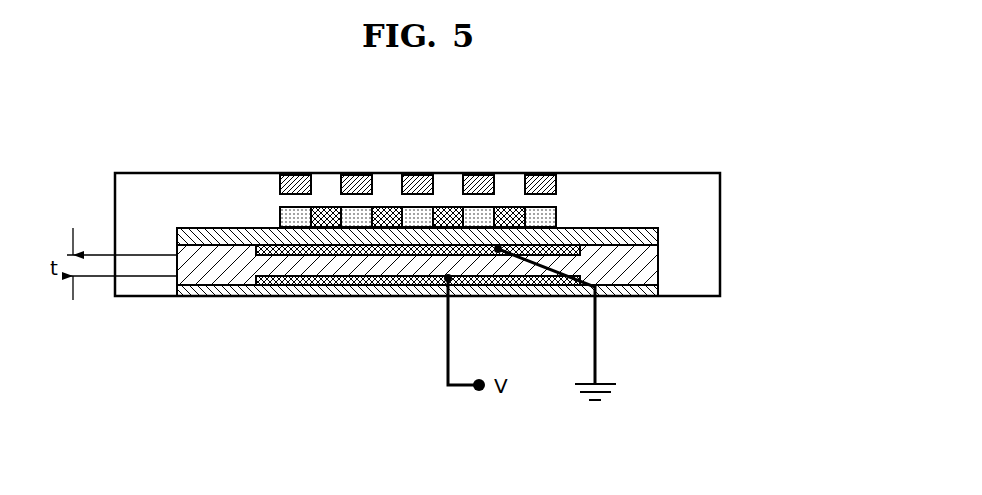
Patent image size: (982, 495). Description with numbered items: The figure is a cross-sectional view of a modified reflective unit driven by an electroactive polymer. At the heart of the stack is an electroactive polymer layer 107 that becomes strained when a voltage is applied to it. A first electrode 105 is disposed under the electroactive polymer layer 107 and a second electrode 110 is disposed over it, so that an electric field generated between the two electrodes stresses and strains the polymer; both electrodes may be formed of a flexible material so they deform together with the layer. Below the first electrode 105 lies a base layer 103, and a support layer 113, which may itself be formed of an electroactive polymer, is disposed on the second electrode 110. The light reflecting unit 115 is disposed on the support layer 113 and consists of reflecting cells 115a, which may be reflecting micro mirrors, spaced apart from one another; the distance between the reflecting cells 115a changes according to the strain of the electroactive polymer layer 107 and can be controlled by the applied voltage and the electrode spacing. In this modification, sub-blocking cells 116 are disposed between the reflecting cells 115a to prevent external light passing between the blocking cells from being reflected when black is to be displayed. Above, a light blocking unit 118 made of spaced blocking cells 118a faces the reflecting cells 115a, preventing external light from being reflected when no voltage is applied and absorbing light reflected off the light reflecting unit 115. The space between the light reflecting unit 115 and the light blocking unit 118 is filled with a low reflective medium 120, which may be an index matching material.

The lower substrate 103 is at (632, 292).
The first electrode 105 is at (268, 286).
The electroactive polymer layer 107 is at (645, 265).
The second electrode 110 is at (262, 245).
The support layer 113 is at (657, 232).
The light reflecting unit 115 is at (547, 196).
The reflecting cells 115a is at (560, 213).
The sub-blocking cells 116 is at (323, 226).
The light blocking unit 118 is at (471, 148).
The blocking cells 118a is at (543, 175).
The low reflective medium 120 is at (160, 191).